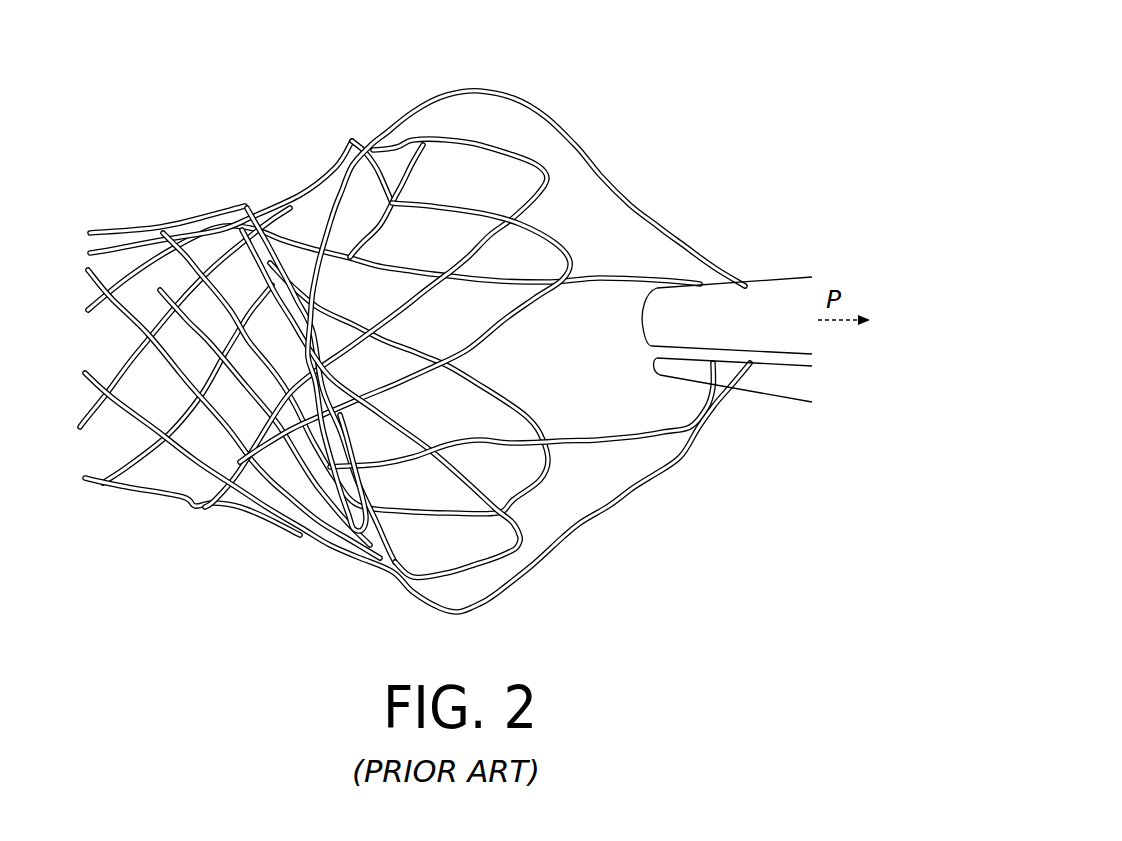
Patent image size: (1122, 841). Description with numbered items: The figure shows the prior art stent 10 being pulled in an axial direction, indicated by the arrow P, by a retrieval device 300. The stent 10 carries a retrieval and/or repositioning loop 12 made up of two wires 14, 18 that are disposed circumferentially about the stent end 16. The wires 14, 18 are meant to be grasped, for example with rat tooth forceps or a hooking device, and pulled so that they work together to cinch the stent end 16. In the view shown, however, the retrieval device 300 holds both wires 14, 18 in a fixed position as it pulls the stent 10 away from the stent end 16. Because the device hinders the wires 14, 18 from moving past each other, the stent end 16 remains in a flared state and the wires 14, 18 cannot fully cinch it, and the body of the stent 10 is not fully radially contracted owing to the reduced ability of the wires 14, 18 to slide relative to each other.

The prior art stent 10 is at (447, 321).
The retrieval and/or repositioning loop 12 is at (640, 525).
The wire 14 is at (640, 270).
The stent end 16 is at (713, 463).
The wire 18 is at (622, 195).
The retrieval device 300 is at (757, 280).